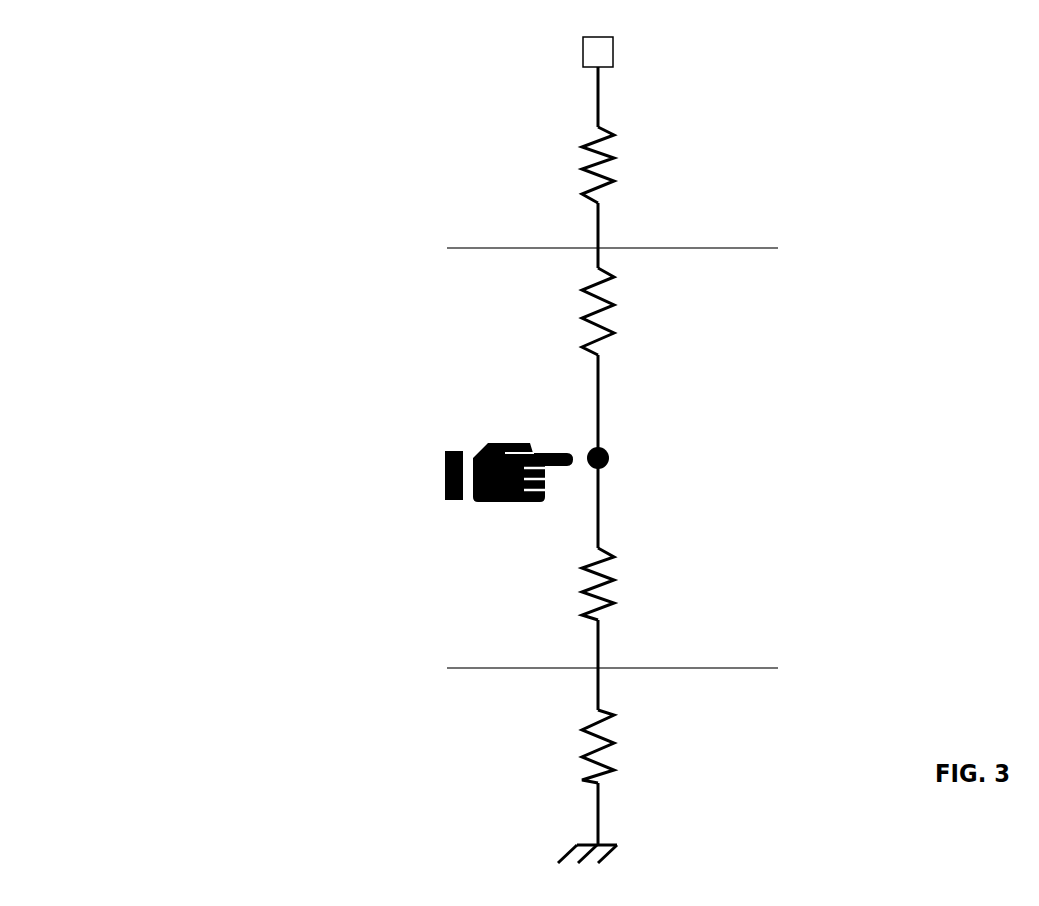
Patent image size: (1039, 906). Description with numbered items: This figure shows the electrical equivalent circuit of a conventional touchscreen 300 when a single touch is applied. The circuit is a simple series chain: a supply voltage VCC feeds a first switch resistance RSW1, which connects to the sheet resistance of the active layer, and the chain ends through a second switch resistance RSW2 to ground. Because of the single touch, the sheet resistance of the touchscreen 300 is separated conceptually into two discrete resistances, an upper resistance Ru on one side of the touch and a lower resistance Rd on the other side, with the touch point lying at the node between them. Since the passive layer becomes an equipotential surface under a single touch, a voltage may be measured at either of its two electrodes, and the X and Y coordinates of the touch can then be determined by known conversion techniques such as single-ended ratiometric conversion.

The touchscreen 300 is at (713, 450).
The supply voltage VCC is at (647, 55).
The first switch resistance RSW1 is at (651, 165).
The upper sheet resistance Ru is at (642, 311).
The lower sheet resistance Rd is at (642, 584).
The second switch resistance RSW2 is at (652, 746).